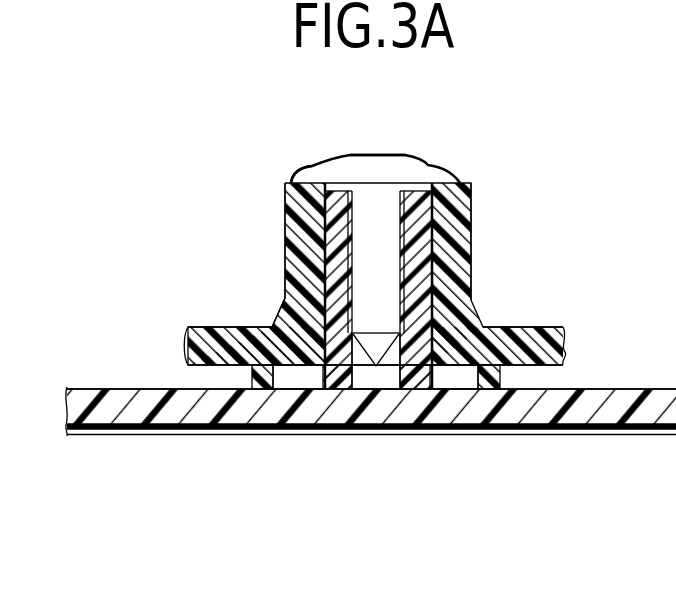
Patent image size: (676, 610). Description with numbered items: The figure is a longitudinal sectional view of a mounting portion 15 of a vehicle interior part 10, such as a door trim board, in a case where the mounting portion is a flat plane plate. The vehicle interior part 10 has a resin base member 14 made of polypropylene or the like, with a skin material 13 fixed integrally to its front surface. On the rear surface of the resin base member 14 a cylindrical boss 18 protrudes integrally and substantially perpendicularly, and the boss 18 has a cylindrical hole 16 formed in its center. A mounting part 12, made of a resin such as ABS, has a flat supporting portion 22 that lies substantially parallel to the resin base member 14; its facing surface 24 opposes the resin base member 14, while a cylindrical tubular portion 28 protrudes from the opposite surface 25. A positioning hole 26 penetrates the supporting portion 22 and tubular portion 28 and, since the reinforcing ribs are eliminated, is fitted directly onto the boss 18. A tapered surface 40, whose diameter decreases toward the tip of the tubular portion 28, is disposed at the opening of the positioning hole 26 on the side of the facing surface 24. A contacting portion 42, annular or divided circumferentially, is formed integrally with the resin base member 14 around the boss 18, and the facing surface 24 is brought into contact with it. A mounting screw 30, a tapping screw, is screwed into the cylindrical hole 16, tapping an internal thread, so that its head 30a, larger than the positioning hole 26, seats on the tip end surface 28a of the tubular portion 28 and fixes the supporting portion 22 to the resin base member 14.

The vehicle interior part 10 is at (155, 502).
The mounting part 12 is at (542, 232).
The skin material 13 is at (100, 434).
The resin base member 14 is at (347, 409).
The mounting portion 15 is at (512, 450).
The cylindrical hole 16 is at (358, 378).
The cylindrical boss 18 is at (337, 207).
The supporting portion 22 is at (222, 337).
The facing surface 24 is at (240, 373).
The surface 25 is at (257, 327).
The positioning hole 26 is at (418, 207).
The tubular portion 28 is at (280, 240).
The tip end surface 28a is at (305, 172).
The mounting screw 30 is at (375, 148).
The head 30a is at (352, 170).
The tapered surface 40 is at (453, 350).
The contacting portion 42 is at (491, 377).